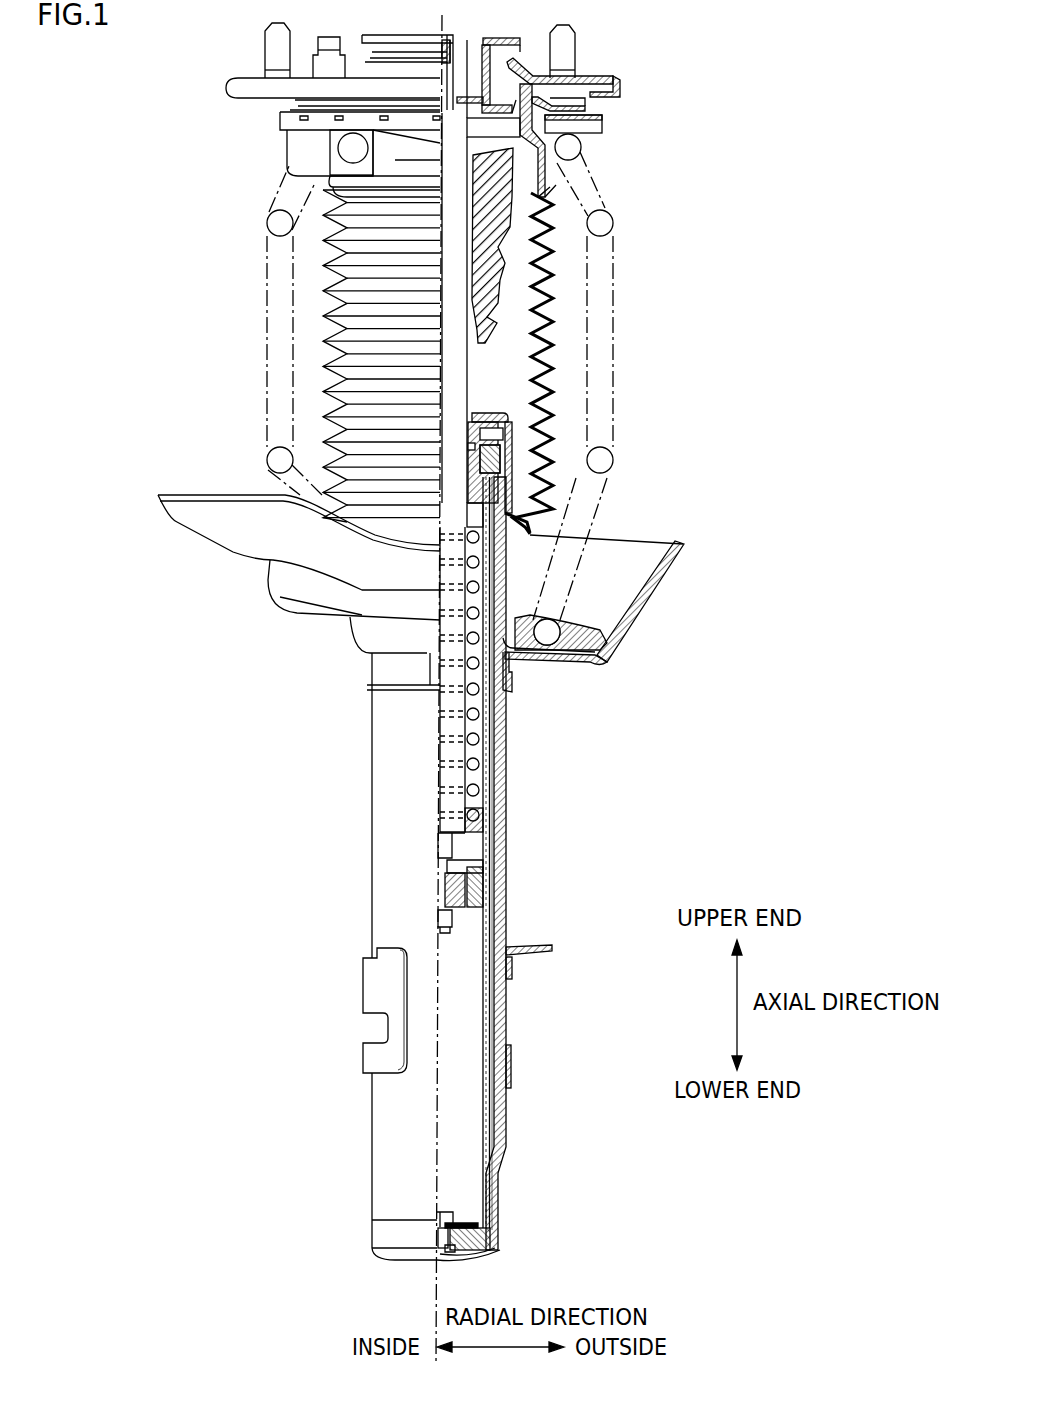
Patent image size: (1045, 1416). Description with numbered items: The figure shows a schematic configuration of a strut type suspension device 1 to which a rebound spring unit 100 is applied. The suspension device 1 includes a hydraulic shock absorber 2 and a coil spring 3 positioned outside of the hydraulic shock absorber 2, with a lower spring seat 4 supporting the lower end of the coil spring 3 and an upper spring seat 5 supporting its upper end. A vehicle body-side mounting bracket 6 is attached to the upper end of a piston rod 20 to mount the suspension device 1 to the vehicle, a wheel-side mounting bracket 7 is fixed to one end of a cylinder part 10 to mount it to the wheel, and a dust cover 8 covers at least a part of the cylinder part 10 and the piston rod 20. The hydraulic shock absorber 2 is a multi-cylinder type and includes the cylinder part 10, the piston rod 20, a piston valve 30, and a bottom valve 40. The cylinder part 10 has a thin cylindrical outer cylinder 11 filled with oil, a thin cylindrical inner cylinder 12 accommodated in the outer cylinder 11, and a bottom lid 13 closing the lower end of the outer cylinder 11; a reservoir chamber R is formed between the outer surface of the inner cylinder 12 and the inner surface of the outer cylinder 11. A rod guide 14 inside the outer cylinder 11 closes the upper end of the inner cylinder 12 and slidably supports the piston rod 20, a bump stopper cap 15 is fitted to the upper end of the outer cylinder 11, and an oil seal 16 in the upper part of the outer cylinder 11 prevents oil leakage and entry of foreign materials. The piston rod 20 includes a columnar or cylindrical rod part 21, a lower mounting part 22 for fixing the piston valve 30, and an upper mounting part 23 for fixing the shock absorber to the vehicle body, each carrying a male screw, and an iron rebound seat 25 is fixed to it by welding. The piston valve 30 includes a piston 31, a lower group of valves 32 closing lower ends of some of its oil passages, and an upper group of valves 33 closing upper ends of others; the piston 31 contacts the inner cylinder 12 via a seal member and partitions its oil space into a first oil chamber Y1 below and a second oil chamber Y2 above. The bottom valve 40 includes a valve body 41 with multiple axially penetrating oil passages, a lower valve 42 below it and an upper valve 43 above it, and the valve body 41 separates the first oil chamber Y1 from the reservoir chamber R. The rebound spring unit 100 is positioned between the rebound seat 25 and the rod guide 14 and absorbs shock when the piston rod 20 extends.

The suspension device 1 is at (660, 70).
The hydraulic shock absorber 2 is at (355, 1218).
The coil spring 3 is at (270, 214).
The lower spring seat 4 is at (228, 493).
The upper spring seat 5 is at (280, 118).
The vehicle body-side mounting bracket 6 is at (243, 47).
The wheel-side mounting bracket 7 is at (363, 992).
The dust cover 8 is at (330, 318).
The cylinder part 10 is at (513, 772).
The outer cylinder 11 is at (503, 828).
The inner cylinder 12 is at (485, 1103).
The bottom lid 13 is at (483, 1258).
The rod guide 14 is at (500, 462).
The bump stopper cap 15 is at (513, 430).
The oil seal 16 is at (478, 413).
The piston rod 20 is at (468, 315).
The rod part 21 is at (468, 773).
The lower mounting part 22 is at (455, 912).
The upper mounting part 23 is at (460, 40).
The rebound seat 25 is at (475, 828).
The piston valve 30 is at (612, 905).
The piston 31 is at (457, 888).
The lower group of valves 32 is at (442, 927).
The upper group of valves 33 is at (473, 860).
The bottom valve 40 is at (612, 1185).
The valve body 41 is at (470, 1240).
The lower valve 42 is at (455, 1250).
The upper valve 43 is at (478, 1223).
The rebound spring unit 100 is at (483, 706).
The first oil chamber Y1 is at (458, 1150).
The second oil chamber Y2 is at (478, 725).
The reservoir chamber R is at (490, 1057).